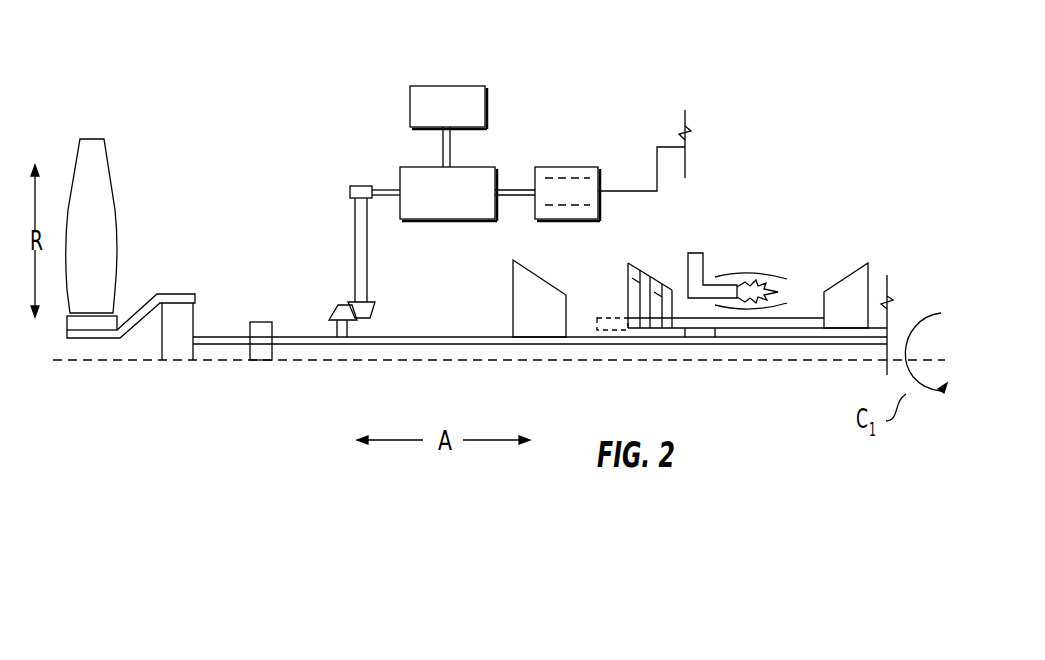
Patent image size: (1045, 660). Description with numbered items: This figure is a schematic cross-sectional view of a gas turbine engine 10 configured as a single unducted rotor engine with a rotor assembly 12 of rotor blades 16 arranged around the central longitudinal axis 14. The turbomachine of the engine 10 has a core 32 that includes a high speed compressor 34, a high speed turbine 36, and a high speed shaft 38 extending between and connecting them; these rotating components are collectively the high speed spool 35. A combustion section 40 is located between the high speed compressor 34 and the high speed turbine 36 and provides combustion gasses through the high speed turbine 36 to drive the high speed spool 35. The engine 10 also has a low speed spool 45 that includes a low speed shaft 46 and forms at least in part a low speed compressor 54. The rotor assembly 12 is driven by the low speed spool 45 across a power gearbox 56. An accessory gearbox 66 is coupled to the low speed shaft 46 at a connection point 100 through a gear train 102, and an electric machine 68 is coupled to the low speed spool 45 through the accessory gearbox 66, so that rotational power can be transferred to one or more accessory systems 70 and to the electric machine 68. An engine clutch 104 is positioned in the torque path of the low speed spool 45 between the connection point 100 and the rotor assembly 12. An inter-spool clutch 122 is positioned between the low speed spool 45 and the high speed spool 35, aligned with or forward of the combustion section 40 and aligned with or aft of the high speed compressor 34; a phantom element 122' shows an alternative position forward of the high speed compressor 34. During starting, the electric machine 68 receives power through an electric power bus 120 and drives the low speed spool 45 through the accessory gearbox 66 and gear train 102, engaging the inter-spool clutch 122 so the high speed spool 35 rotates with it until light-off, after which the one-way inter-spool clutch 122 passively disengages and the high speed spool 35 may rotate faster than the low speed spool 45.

The gas turbine engine 10 is at (774, 76).
The rotor assembly 12 is at (162, 210).
The central longitudinal axis 14 is at (90, 360).
The rotor blade 16 is at (113, 178).
The core 32 is at (753, 226).
The high speed compressor 34 is at (645, 268).
The high speed spool 35 is at (838, 272).
The high speed turbine 36 is at (858, 318).
The high speed shaft 38 is at (778, 330).
The combustion section 40 is at (760, 274).
The low speed spool 45 is at (465, 292).
The low speed shaft 46 is at (438, 340).
The low speed compressor 54 is at (545, 328).
The power gearbox 56 is at (178, 340).
The accessory gearbox 66 is at (457, 203).
The electric machine 68 is at (572, 167).
The accessory system 70 is at (457, 119).
The connection point 100 is at (340, 300).
The gear train 102 is at (336, 207).
The engine clutch 104 is at (253, 320).
The electric power bus 120 is at (668, 147).
The inter-spool clutch 122 is at (706, 371).
The inter-spool clutch (alternative position) 122' is at (583, 361).